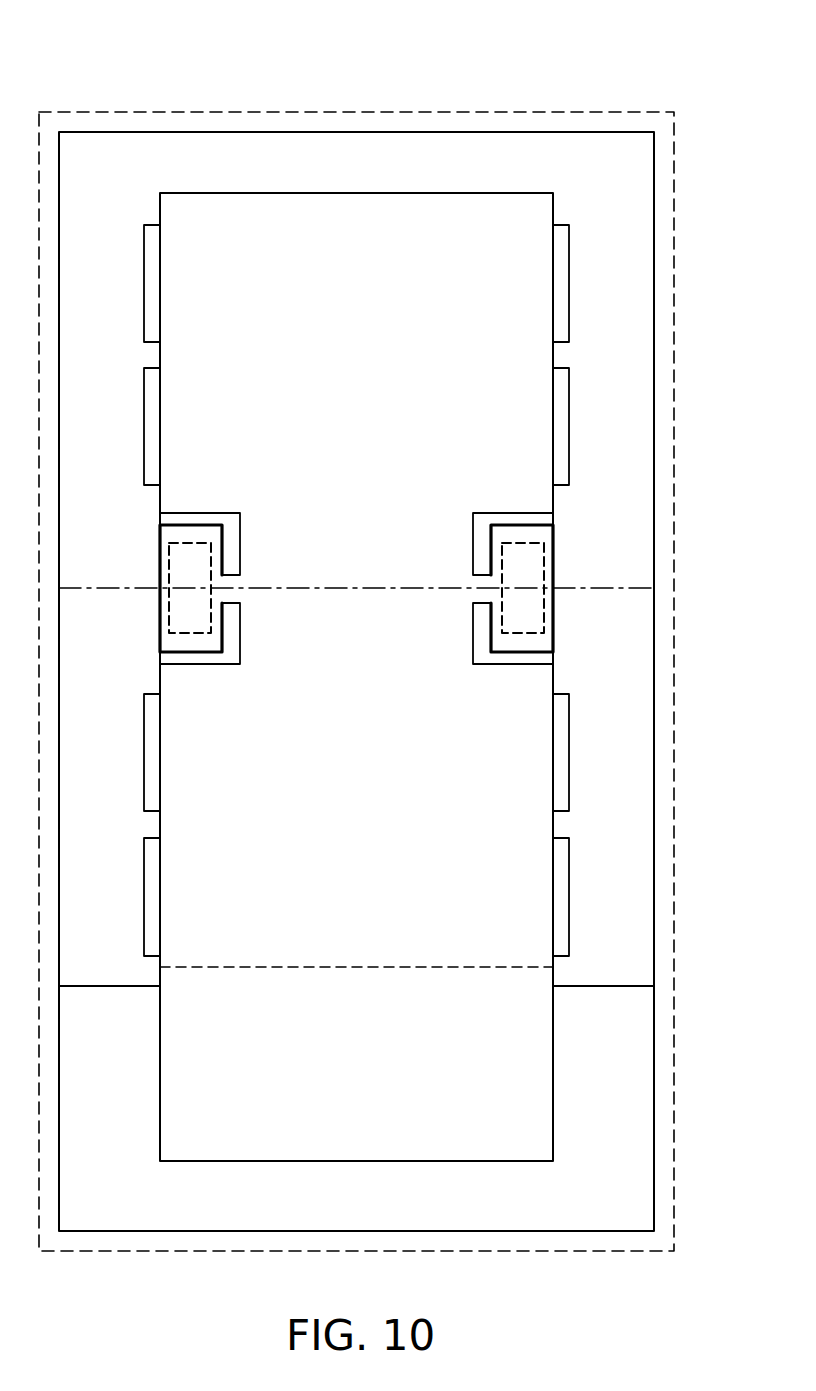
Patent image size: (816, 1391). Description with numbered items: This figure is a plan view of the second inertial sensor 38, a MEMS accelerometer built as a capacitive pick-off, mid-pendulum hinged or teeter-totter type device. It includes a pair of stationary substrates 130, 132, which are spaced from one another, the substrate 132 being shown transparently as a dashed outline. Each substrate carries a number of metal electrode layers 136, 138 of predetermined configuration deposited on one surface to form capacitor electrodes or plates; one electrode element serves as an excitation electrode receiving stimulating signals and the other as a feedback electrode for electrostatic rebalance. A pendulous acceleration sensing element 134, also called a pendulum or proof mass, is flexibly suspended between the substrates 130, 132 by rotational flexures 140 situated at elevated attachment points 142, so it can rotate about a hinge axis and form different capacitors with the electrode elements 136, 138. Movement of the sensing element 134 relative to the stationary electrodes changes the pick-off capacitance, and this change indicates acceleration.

The second inertial sensor 38 is at (158, 86).
The stationary substrate 130 is at (222, 1232).
The stationary substrate 132 is at (110, 1252).
The pendulous acceleration sensing element 134 is at (440, 1163).
The metal electrode layer 136 is at (144, 412).
The metal electrode layer 138 is at (144, 289).
The rotational flexure 140 is at (238, 580).
The elevated attachment point 142 is at (172, 570).